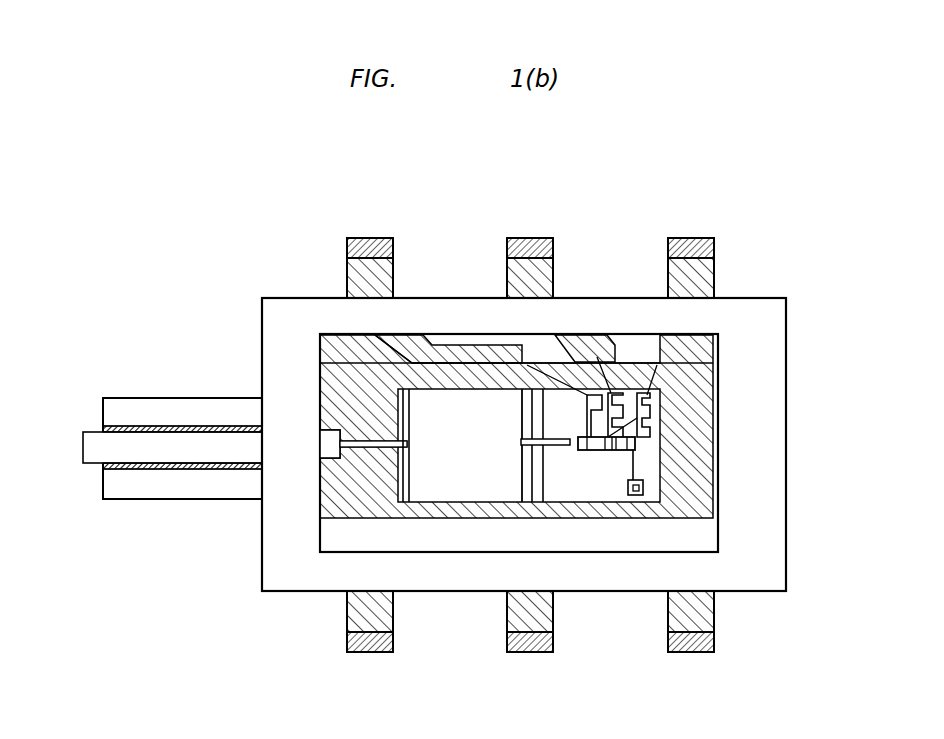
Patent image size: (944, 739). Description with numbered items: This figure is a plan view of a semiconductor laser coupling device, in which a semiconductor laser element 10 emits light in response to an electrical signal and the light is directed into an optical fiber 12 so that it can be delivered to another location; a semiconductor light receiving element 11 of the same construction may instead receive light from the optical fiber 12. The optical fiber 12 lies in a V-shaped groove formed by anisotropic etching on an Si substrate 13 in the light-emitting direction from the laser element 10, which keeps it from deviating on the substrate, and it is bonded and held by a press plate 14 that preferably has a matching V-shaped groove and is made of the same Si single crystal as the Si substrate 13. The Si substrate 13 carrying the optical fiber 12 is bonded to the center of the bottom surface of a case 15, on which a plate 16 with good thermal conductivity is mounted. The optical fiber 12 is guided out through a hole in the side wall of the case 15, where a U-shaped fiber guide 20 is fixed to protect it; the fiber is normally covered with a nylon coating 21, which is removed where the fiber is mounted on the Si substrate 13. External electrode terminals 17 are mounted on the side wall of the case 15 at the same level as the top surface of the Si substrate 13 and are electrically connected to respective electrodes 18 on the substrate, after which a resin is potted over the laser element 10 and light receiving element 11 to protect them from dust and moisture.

The semiconductor laser element 10 is at (593, 453).
The semiconductor light receiving element 11 is at (636, 453).
The optical fiber 12 is at (560, 447).
The Si substrate 13 is at (647, 485).
The press plate 14 is at (457, 485).
The case 15 is at (737, 303).
The plate 16 is at (342, 367).
The external electrode terminal 17 is at (377, 238).
The electrode 18 is at (656, 408).
The U-shaped fiber guide 20 is at (160, 492).
The nylon coating 21 is at (90, 433).